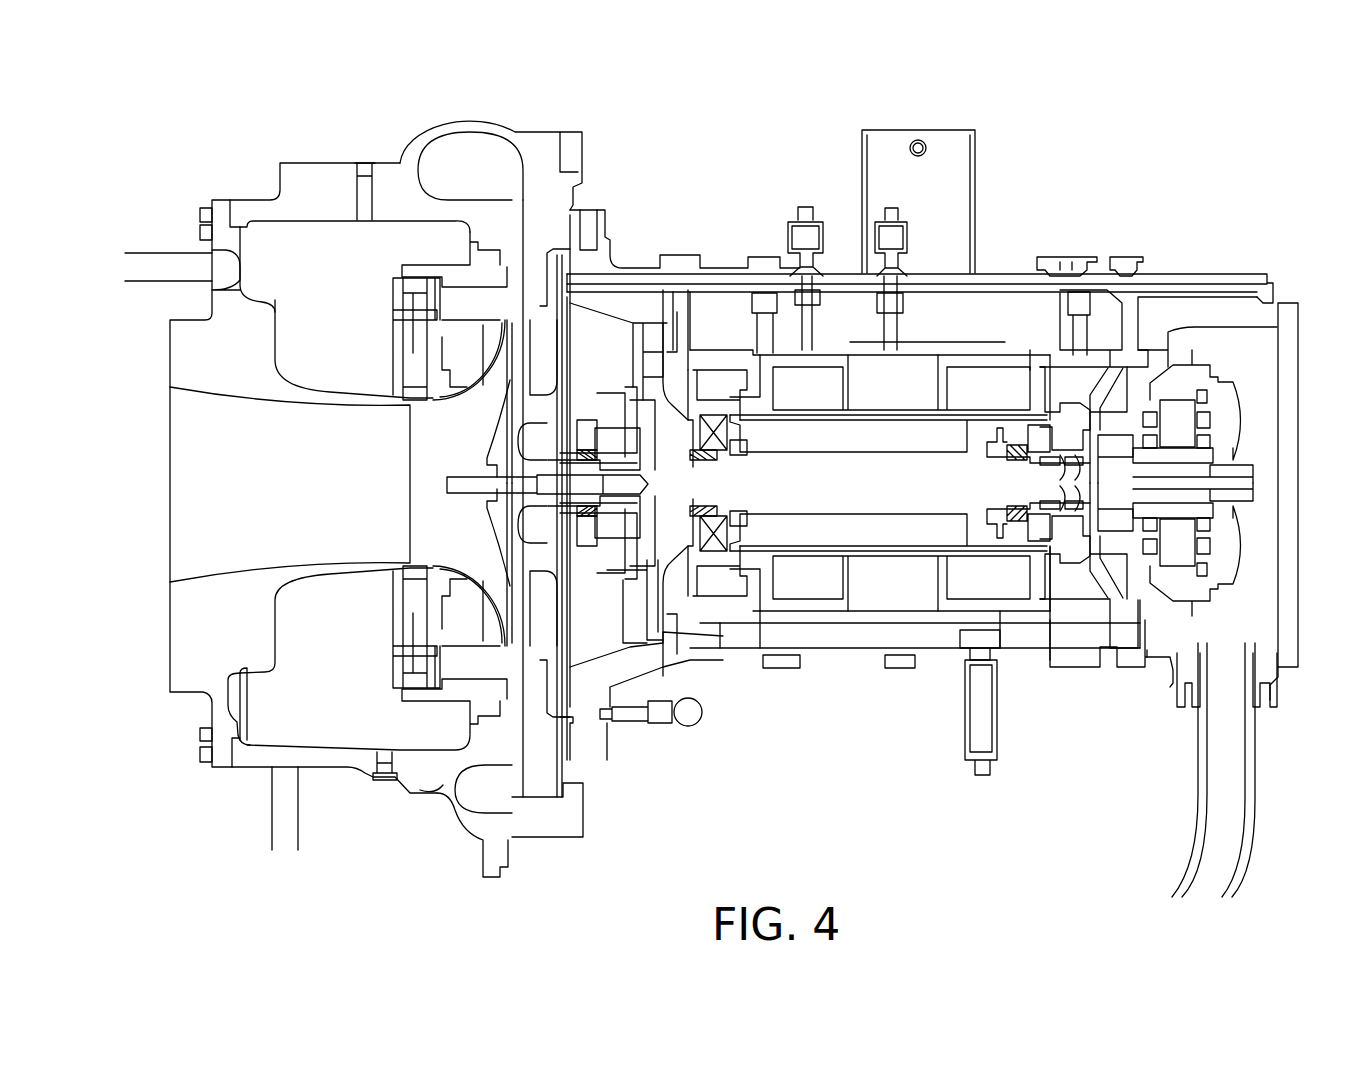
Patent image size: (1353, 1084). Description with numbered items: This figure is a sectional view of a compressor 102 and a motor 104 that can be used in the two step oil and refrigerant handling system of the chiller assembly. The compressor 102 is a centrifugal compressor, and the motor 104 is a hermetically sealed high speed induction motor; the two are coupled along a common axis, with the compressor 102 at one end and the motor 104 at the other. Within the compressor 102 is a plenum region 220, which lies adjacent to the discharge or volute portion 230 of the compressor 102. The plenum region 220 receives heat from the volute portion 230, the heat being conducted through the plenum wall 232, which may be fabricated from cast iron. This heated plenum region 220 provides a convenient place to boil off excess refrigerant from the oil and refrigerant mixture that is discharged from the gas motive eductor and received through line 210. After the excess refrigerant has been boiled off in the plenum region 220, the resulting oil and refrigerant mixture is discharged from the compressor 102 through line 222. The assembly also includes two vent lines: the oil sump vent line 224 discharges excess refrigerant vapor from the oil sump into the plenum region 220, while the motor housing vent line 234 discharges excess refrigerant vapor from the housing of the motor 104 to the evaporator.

The compressor 102 is at (144, 144).
The motor 104 is at (1257, 187).
The line 210 is at (152, 288).
The plenum region 220 is at (365, 290).
The line 222 is at (378, 786).
The oil sump vent line 224 is at (268, 822).
The volute portion 230 is at (470, 175).
The plenum wall 232 is at (388, 200).
The motor housing vent line 234 is at (1198, 775).